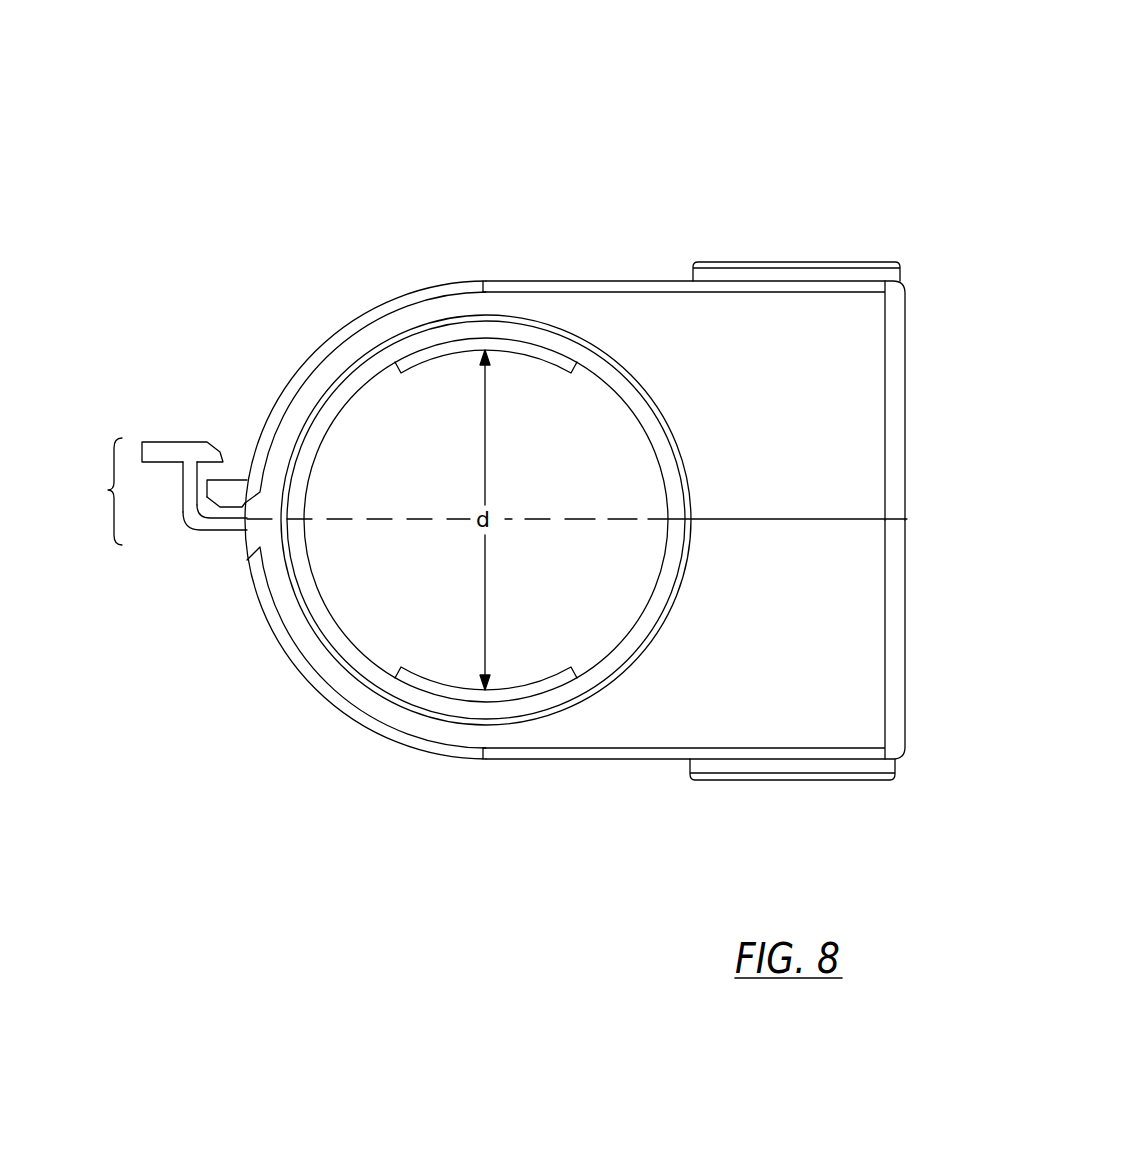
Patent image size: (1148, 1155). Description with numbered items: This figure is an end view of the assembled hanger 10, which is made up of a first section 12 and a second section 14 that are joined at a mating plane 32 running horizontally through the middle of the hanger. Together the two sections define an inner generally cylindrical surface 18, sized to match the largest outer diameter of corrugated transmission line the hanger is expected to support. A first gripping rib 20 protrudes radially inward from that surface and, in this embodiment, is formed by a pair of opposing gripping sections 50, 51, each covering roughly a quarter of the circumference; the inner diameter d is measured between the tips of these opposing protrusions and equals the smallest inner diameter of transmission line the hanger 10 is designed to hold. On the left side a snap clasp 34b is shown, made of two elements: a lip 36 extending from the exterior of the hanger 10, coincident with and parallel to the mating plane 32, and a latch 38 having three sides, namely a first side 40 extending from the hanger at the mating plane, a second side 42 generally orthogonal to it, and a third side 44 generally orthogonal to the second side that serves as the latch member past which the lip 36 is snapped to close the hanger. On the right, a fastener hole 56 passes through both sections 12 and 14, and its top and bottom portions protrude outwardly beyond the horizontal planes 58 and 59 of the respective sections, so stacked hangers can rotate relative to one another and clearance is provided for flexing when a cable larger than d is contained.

The hanger 10 is at (437, 122).
The first section 12 is at (867, 628).
The second section 14 is at (867, 420).
The inner generally cylindrical surface 18 is at (618, 397).
The first gripping rib 20 is at (532, 380).
The mating plane 32 is at (584, 515).
The snap clasp 34b is at (96, 491).
The lip 36 is at (237, 492).
The latch 38 is at (163, 494).
The first side 40 is at (220, 533).
The second side 42 is at (182, 505).
The third side 44 is at (212, 440).
The gripping section 50 is at (552, 670).
The gripping section 51 is at (403, 373).
The fastener hole 56 is at (849, 262).
The horizontal plane 58 is at (578, 760).
The horizontal plane 59 is at (578, 280).